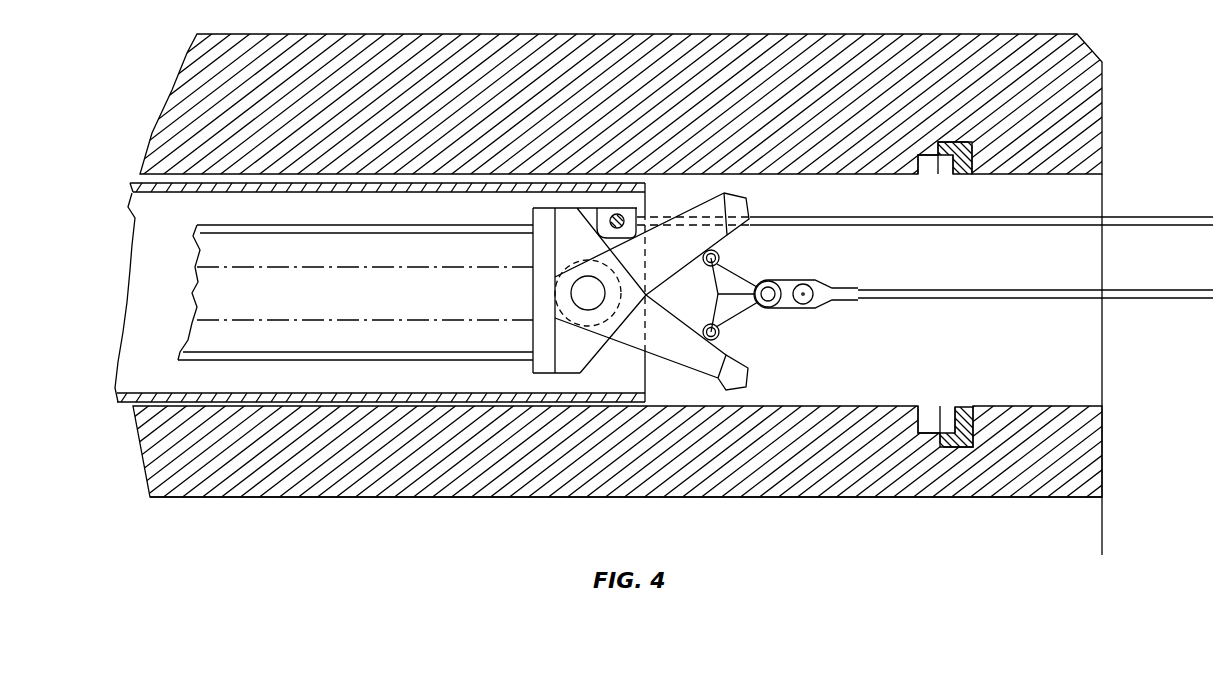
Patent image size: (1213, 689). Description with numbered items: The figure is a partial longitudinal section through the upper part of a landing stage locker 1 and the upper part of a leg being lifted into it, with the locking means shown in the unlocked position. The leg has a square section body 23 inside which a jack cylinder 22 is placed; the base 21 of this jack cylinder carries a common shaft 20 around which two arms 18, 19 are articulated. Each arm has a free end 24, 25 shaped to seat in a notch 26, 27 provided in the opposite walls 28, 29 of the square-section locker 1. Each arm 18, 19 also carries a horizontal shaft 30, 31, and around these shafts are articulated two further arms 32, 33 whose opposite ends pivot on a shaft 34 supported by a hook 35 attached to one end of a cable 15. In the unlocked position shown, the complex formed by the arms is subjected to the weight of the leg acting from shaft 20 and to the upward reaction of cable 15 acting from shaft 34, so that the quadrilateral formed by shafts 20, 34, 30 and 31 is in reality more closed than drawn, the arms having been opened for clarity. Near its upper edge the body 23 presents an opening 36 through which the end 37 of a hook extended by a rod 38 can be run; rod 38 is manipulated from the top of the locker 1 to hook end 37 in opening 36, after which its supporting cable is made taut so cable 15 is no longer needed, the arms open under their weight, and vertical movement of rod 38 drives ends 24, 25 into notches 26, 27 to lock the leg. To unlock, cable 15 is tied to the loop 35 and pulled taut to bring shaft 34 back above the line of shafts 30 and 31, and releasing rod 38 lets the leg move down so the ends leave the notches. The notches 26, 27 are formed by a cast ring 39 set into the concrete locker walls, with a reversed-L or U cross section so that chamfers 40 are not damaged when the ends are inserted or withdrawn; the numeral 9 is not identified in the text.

The locker 1 is at (1104, 358).
The body 9 is at (660, 497).
The cable 15 is at (1135, 297).
The arm 18 is at (678, 355).
The arm 19 is at (681, 237).
The common shaft 20 is at (586, 292).
The base of jack cylinder 21 is at (586, 356).
The jack cylinder 22 is at (432, 360).
The square section body 23 is at (496, 393).
The free end 24 is at (752, 211).
The free end 25 is at (754, 383).
The notch 26 is at (946, 426).
The notch 27 is at (945, 172).
The wall 28 is at (853, 407).
The wall 29 is at (808, 175).
The horizontal shaft 30 is at (708, 340).
The horizontal shaft 31 is at (715, 262).
The arm 32 is at (745, 311).
The arm 33 is at (740, 270).
The shaft 34 is at (774, 304).
The hook 35 is at (811, 298).
The opening 36 is at (600, 226).
The hook end 37 is at (622, 209).
The rod 38 is at (886, 226).
The cast steel or iron ring 39 is at (958, 170).
The chamfers 40 is at (918, 168).